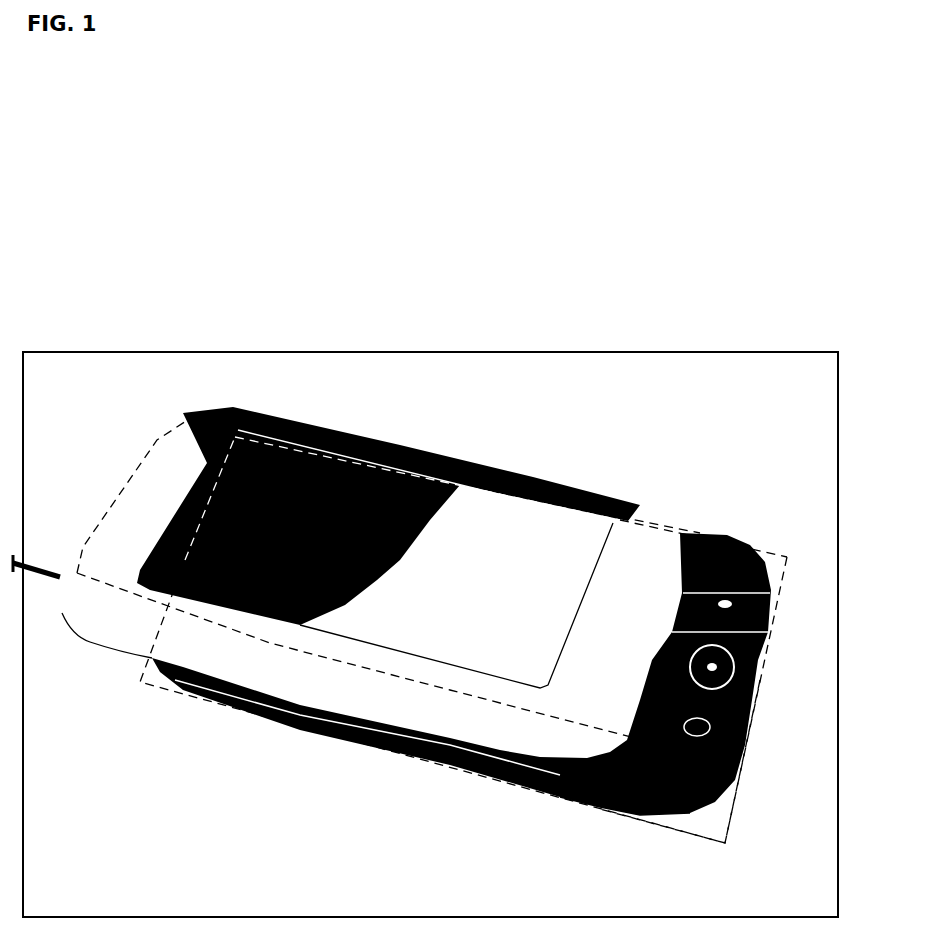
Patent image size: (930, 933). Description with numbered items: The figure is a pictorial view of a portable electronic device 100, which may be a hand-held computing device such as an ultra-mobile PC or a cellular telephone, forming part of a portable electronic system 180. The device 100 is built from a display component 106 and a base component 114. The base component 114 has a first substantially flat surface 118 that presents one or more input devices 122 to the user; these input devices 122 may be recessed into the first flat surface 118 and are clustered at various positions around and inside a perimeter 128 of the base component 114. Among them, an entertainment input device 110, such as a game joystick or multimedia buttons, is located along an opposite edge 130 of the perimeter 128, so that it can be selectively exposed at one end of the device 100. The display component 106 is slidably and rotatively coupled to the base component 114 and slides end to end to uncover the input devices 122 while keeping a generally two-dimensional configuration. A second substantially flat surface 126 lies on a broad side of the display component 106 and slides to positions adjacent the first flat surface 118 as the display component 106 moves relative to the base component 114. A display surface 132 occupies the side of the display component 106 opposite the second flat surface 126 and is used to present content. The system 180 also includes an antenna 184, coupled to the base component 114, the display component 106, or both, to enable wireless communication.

The portable electronic device 100 is at (96, 352).
The portable electronic system 180 is at (644, 179).
The display component 106 is at (636, 503).
The display surface 132 is at (198, 456).
The antenna 184 is at (30, 565).
The entertainment input device 110 is at (788, 549).
The input device 122 is at (794, 612).
The second substantially flat surface 126 is at (87, 650).
The perimeter 128 is at (161, 687).
The opposite edge 130 is at (721, 856).
The base component 114 is at (528, 780).
The first substantially flat surface 118 is at (606, 795).